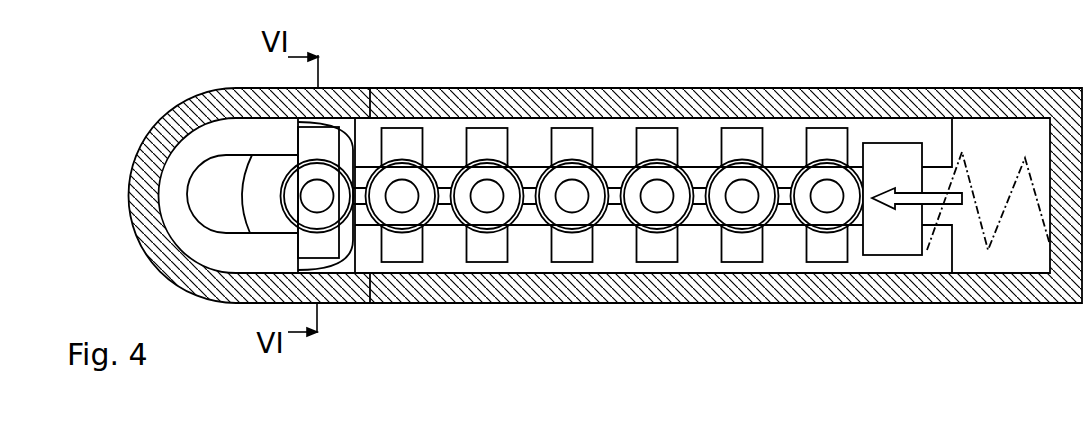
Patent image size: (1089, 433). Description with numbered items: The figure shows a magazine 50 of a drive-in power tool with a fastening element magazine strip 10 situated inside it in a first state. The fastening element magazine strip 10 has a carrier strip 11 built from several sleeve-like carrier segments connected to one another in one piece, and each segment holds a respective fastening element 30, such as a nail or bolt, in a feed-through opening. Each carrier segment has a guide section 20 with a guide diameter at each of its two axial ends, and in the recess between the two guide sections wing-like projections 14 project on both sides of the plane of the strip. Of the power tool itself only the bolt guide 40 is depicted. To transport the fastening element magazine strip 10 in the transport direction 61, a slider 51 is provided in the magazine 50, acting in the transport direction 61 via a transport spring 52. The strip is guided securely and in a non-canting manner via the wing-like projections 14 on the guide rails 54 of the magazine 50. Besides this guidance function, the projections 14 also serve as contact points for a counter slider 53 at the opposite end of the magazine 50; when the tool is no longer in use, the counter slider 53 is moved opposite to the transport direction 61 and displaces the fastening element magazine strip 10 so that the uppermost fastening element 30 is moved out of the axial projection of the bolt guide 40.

The fastening element magazine strip 10 is at (453, 122).
The carrier strip 11 is at (528, 190).
The wing-like projections 14 is at (827, 145).
The guide section 20 is at (743, 233).
The fastening element 30 is at (738, 172).
The bolt guide 40 is at (350, 130).
The magazine 50 is at (158, 118).
The slider 51 is at (882, 150).
The transport spring 52 is at (968, 177).
The counter slider 53 is at (243, 135).
The guide rails 54 is at (697, 145).
The transport direction 61 is at (908, 198).